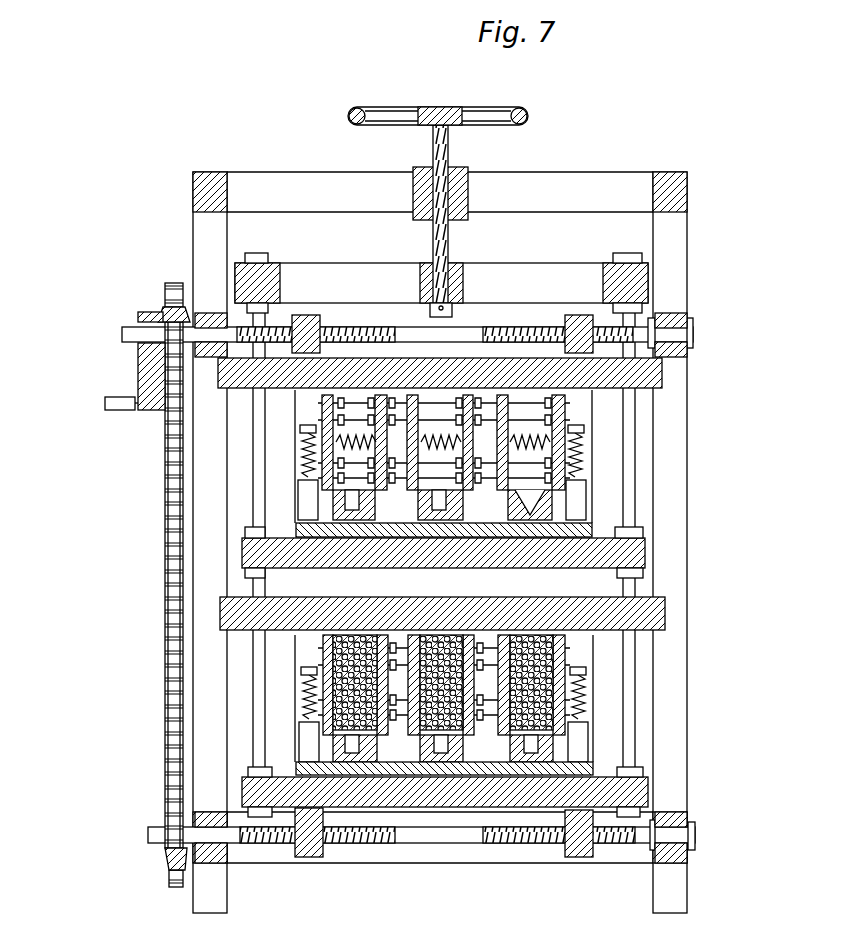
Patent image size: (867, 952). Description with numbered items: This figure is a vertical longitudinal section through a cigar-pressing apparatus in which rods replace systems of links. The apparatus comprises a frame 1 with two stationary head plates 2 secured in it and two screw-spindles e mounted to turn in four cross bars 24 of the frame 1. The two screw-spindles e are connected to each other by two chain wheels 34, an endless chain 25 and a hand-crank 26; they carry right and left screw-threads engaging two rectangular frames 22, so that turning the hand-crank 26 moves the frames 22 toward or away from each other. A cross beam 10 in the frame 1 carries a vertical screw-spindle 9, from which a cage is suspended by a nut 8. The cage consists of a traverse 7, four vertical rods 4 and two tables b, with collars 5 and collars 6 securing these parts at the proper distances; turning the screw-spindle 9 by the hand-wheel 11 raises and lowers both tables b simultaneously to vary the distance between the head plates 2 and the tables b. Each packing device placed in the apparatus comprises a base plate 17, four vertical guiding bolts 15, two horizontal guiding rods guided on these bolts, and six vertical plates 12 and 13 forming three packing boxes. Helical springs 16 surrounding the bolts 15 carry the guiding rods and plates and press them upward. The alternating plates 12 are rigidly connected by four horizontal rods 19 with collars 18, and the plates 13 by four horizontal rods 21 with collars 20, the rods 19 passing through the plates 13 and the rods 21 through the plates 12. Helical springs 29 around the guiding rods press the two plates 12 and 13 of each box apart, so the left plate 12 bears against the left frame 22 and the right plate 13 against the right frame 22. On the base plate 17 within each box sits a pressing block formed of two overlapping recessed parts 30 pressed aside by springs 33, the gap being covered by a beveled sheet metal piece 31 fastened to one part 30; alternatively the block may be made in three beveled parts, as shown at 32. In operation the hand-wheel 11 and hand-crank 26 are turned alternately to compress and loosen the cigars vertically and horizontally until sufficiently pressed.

The frame 1 is at (440, 542).
The stationary head plate 2 is at (662, 386).
The vertical rod 4 is at (253, 424).
The collar 5 is at (265, 572).
The collar 6 is at (610, 268).
The traverse 7 is at (441, 283).
The nut 8 is at (430, 309).
The vertical screw-spindle 9 is at (449, 246).
The cross beam 10 is at (466, 168).
The hand-wheel 11 is at (360, 107).
The vertical plate 12 is at (418, 635).
The vertical plate 13 is at (378, 635).
The vertical guiding bolt 15 is at (302, 426).
The helical spring 16 is at (302, 445).
The base plate 17 is at (586, 523).
The collar 18 is at (322, 408).
The horizontal rod 19 is at (466, 395).
The collar 20 is at (566, 412).
The horizontal rod 21 is at (360, 403).
The rectangular frame 22 is at (585, 447).
The cross bar 24 is at (203, 313).
The endless chain 25 is at (165, 500).
The hand-crank 26 is at (138, 360).
The helical spring 29 is at (410, 395).
The recessed part 30 is at (375, 505).
The sheet metal piece 31 is at (465, 624).
The three-part pressing block 32 is at (448, 508).
The spring 33 is at (452, 568).
The chain wheel 34 is at (166, 305).
The table b is at (640, 546).
The screw-spindle e is at (458, 327).